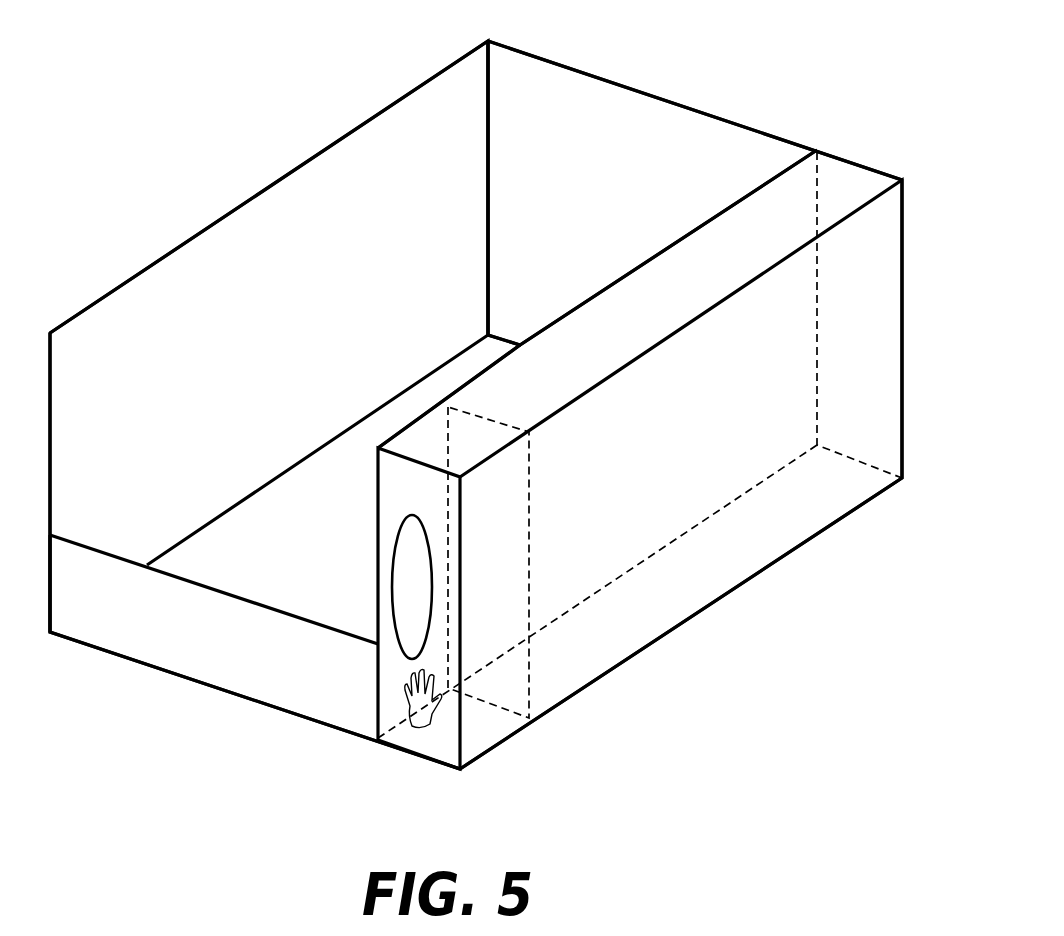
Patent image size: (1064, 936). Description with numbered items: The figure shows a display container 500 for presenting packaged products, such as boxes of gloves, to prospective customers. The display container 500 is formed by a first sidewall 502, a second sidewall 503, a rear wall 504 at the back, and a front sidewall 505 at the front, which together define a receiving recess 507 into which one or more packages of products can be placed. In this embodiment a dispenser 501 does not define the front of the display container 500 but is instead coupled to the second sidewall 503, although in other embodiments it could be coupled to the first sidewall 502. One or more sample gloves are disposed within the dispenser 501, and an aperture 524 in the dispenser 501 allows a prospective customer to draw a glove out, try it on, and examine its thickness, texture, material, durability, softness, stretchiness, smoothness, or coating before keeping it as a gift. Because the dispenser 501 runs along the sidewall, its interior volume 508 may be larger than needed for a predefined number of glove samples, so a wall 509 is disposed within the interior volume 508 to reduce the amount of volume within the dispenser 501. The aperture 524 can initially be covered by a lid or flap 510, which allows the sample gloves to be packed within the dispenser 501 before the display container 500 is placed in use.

The display container 500 is at (277, 140).
The dispenser 501 is at (380, 743).
The first sidewall 502 is at (213, 257).
The second sidewall 503 is at (903, 310).
The back wall 504 is at (668, 98).
The front sidewall 505 is at (252, 672).
The receiving recess 507 is at (433, 130).
The interior volume 508 is at (843, 263).
The wall 509 is at (529, 517).
The lid or flap 510 is at (426, 437).
The aperture 524 is at (388, 582).